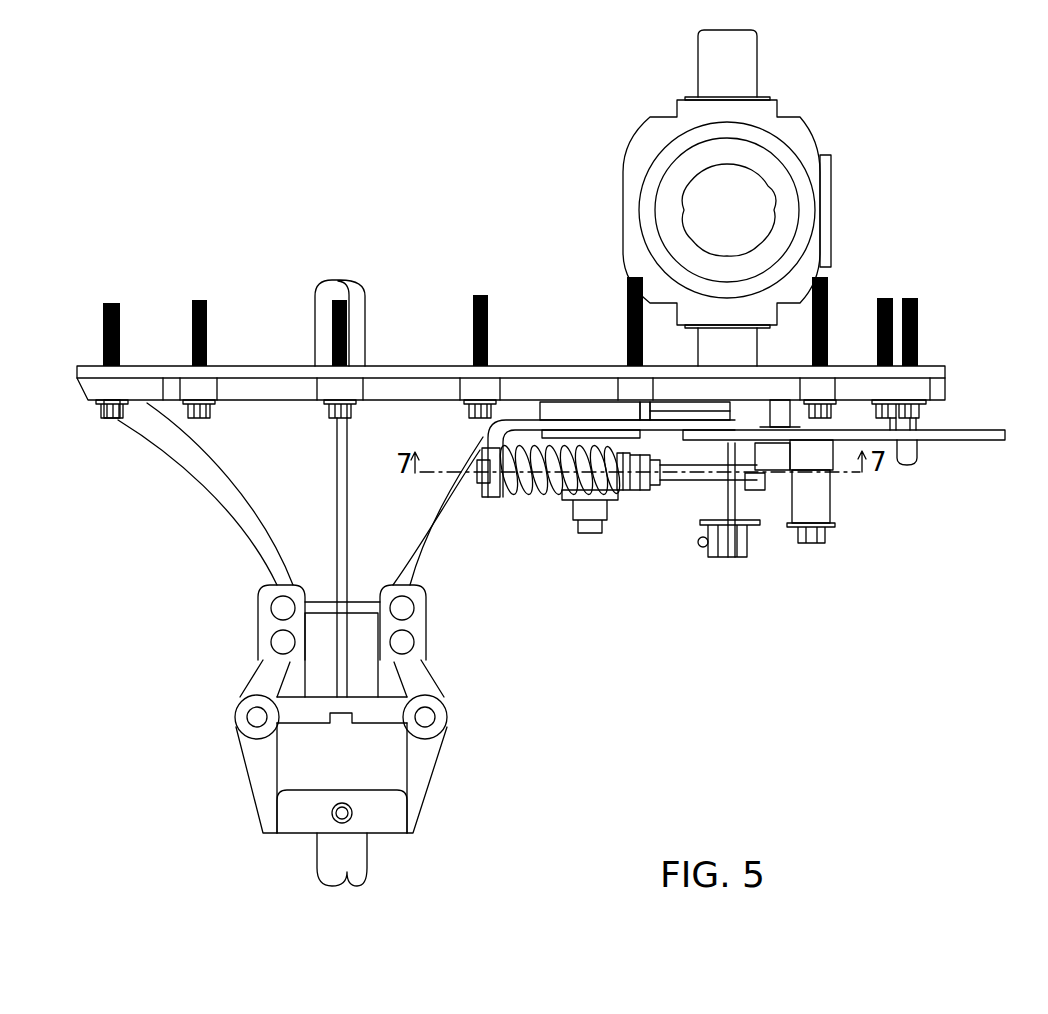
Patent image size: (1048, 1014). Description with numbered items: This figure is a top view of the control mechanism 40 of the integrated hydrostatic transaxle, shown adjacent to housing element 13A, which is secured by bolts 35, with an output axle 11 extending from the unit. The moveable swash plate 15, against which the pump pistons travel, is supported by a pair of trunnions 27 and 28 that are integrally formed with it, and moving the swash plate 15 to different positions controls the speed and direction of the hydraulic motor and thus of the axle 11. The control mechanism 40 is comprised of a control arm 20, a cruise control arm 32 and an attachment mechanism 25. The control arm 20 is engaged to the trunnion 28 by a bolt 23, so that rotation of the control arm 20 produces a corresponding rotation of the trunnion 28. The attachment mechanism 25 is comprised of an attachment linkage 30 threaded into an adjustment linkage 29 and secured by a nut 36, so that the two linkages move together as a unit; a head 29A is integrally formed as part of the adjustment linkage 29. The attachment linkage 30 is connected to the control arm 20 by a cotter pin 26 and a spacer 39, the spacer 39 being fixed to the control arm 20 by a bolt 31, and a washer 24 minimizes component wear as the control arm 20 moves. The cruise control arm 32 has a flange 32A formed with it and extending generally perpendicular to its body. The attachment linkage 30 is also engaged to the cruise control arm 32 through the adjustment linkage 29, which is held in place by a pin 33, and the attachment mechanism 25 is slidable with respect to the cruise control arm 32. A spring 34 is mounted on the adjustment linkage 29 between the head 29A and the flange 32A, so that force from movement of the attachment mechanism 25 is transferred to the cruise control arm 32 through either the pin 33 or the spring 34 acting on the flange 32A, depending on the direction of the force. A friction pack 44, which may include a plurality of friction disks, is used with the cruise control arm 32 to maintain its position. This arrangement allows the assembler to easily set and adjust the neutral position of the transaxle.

The output axle 11 is at (318, 292).
The housing element 13A is at (212, 490).
The swash plate 15 is at (832, 233).
The control arm 20 is at (966, 430).
The bolt 23 is at (741, 500).
The washer 24 is at (790, 481).
The attachment mechanism 25 is at (593, 485).
The cotter pin 26 is at (775, 490).
The trunnion 27 is at (746, 83).
The trunnion 28 is at (746, 364).
The adjustment linkage 29 is at (536, 495).
The head 29A is at (628, 491).
The attachment linkage 30 is at (671, 480).
The bolt 31 is at (773, 418).
The cruise control arm 32 is at (524, 420).
The flange 32A is at (500, 500).
The pin 33 is at (489, 498).
The spring 34 is at (528, 501).
The bolts 35 is at (117, 422).
The nut 36 is at (644, 490).
The spacer 39 is at (774, 450).
The control mechanism 40 is at (852, 457).
The friction pack 44 is at (590, 404).